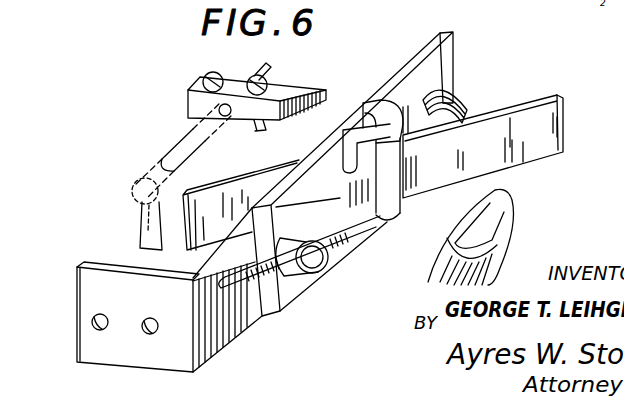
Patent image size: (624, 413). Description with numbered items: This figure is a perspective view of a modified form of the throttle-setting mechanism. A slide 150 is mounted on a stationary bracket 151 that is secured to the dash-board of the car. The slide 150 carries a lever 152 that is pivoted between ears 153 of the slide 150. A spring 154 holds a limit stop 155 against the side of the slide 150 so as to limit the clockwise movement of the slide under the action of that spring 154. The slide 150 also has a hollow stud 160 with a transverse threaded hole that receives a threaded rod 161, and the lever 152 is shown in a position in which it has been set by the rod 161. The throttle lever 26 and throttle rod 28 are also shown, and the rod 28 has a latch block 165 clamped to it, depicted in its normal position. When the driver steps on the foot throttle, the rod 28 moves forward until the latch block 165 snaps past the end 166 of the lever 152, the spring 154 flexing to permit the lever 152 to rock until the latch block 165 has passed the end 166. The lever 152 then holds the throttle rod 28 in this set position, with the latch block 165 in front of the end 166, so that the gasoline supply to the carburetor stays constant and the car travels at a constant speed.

The throttle lever 26 is at (147, 223).
The throttle rod 28 is at (150, 170).
The slide 150 is at (417, 55).
The stationary bracket 151 is at (90, 287).
The lever 152 is at (547, 110).
The ears 153 is at (387, 120).
The spring 154 is at (470, 100).
The limit stop 155 is at (340, 157).
The hollow stud 160 is at (323, 262).
The threaded rod 161 is at (505, 212).
The latch block 165 is at (290, 100).
The end of the lever 166 is at (185, 246).